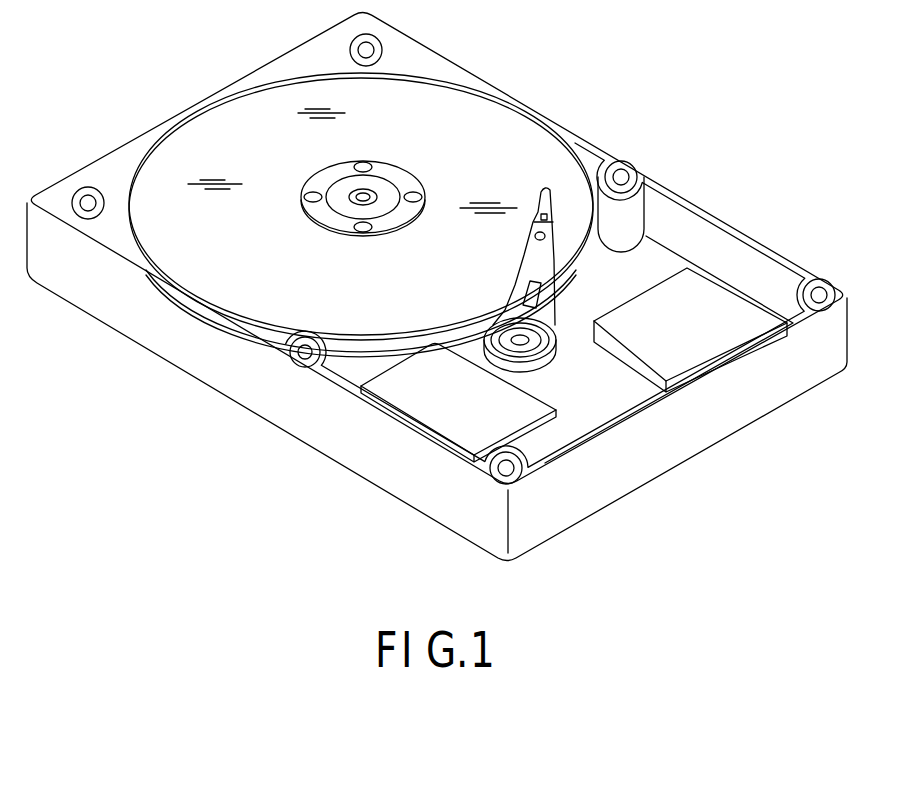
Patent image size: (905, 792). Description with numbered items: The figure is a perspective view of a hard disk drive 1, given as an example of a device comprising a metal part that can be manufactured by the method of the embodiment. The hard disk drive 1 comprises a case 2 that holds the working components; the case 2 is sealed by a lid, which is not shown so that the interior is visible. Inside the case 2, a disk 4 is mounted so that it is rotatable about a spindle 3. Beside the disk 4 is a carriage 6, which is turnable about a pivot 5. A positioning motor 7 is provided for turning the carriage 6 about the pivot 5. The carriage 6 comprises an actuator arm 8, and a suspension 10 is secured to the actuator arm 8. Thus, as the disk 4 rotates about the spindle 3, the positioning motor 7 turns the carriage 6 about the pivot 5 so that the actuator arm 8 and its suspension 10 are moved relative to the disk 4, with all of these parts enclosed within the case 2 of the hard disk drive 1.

The hard disk drive 1 is at (733, 96).
The case 2 is at (228, 385).
The spindle 3 is at (378, 185).
The disk 4 is at (482, 127).
The pivot 5 is at (525, 345).
The carriage 6 is at (583, 280).
The positioning motor 7 is at (442, 422).
The actuator arm 8 is at (540, 318).
The suspension 10 is at (544, 188).